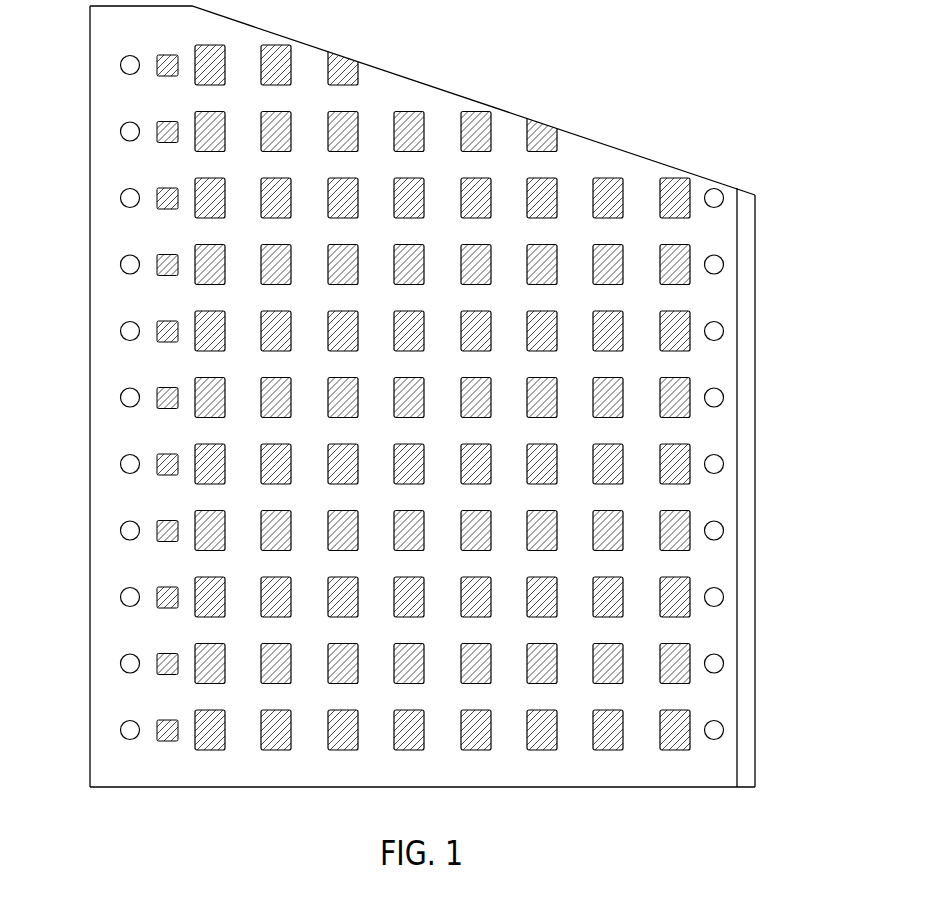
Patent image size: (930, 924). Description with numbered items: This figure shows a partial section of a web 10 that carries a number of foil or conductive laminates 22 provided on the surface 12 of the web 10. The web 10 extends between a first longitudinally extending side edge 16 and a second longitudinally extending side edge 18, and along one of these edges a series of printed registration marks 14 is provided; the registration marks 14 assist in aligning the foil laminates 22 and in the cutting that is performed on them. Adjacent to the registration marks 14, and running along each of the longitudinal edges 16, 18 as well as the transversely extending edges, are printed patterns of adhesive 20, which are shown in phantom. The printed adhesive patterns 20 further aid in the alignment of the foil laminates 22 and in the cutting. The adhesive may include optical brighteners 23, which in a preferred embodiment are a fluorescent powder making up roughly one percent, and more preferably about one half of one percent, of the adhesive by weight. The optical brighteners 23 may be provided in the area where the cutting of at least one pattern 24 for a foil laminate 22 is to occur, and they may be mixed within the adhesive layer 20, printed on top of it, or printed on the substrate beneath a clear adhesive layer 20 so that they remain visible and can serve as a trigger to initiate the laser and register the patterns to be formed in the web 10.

The web 10 is at (425, 396).
The surface 12 is at (422, 396).
The printed registration marks 14 is at (167, 55).
The first longitudinally extending side edge 16 is at (90, 44).
The second longitudinally extending side edge 18 is at (757, 212).
The printed patterns of adhesive 20 is at (129, 55).
The foil laminates 22 is at (292, 133).
The optical brighteners 23 is at (716, 203).
The pattern 24 is at (292, 596).